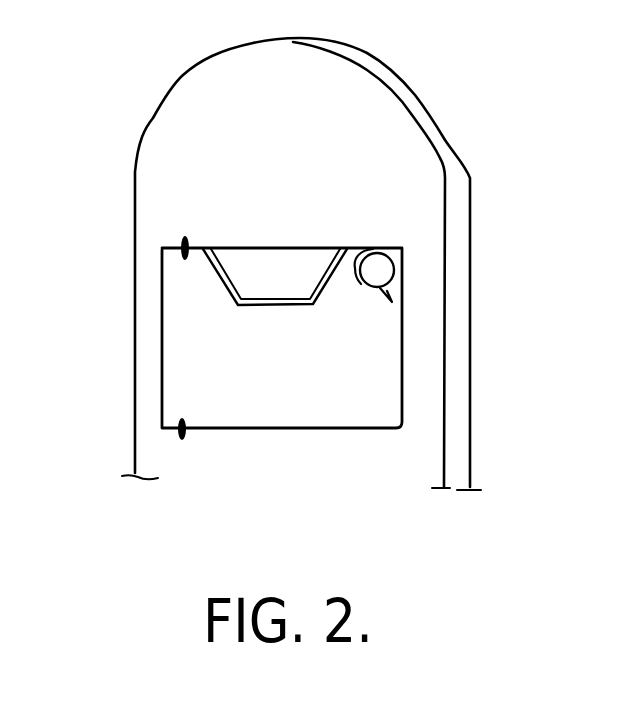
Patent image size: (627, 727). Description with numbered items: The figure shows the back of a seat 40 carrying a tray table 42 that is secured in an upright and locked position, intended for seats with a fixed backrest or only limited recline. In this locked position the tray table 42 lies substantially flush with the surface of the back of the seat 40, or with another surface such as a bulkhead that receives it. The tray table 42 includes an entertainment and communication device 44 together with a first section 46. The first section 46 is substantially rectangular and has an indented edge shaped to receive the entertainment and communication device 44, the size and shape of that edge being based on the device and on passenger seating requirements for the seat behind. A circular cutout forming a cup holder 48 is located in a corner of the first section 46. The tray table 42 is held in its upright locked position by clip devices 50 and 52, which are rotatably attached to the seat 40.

The seat 40 is at (393, 83).
The tray table 42 is at (405, 262).
The entertainment and communication device 44 is at (288, 262).
The first section 46 is at (372, 353).
The cup holder 48 is at (393, 302).
The clip device 50 is at (180, 238).
The clip device 52 is at (181, 437).